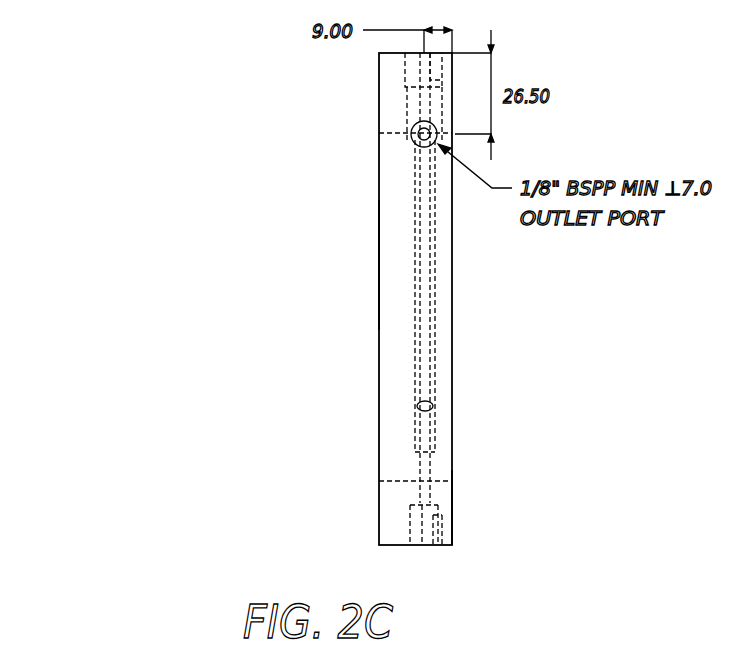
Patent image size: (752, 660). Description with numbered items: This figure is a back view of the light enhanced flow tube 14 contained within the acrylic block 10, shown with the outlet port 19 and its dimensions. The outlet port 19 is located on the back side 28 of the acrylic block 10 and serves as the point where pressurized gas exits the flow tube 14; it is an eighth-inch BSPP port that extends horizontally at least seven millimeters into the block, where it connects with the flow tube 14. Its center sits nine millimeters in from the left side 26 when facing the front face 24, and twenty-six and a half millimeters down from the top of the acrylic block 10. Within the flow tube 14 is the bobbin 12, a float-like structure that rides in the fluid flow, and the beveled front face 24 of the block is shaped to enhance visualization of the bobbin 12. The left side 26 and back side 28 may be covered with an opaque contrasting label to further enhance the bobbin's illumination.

The acrylic block 10 is at (145, 56).
The bobbin 12 is at (418, 408).
The light enhanced flow tube 14 is at (427, 335).
The outlet port 19 is at (402, 112).
The beveled front face 24 is at (443, 203).
The left side 26 is at (452, 472).
The back side 28 is at (390, 262).